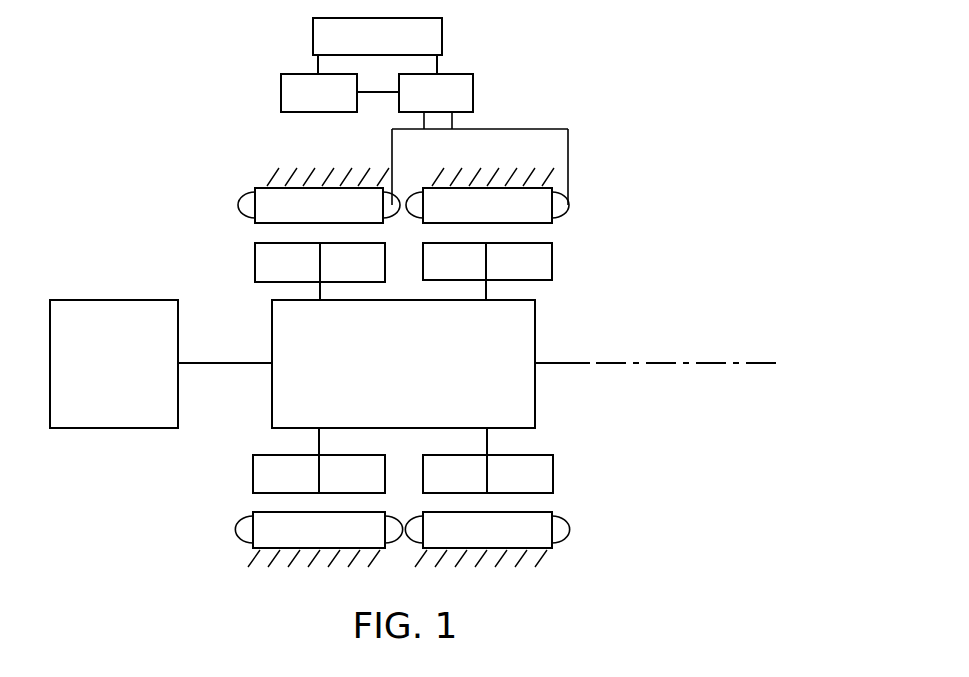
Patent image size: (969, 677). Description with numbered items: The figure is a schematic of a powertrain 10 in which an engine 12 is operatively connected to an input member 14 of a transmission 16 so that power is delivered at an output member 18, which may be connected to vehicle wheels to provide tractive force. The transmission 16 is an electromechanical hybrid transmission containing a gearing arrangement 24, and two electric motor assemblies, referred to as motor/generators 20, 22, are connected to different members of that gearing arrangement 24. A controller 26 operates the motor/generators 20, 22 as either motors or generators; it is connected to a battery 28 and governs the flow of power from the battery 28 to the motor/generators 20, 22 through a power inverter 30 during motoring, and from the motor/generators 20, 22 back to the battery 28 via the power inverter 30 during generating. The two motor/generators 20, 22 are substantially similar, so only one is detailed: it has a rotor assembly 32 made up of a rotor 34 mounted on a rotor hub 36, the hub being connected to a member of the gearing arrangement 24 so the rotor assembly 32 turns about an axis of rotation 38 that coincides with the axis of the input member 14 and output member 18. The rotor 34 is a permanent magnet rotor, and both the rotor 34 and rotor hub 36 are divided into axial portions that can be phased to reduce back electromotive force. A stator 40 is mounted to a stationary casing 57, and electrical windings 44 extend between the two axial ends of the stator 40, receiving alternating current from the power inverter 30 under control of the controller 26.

The powertrain 10 is at (597, 77).
The engine 12 is at (114, 364).
The input member 14 is at (248, 365).
The transmission 16 is at (577, 255).
The output member 18 is at (563, 357).
The motor/generator 20 is at (218, 187).
The motor/generator 22 is at (580, 177).
The gearing arrangement 24 is at (403, 364).
The controller 26 is at (319, 93).
The battery 28 is at (377, 36).
The power inverter 30 is at (436, 93).
The rotor assembly 32 is at (232, 253).
The rotor 34 is at (255, 260).
The rotor hub 36 is at (313, 285).
The axis of rotation 38 is at (715, 362).
The stator 40 is at (327, 205).
The electrical windings 44 is at (253, 190).
The casing 57 is at (290, 178).